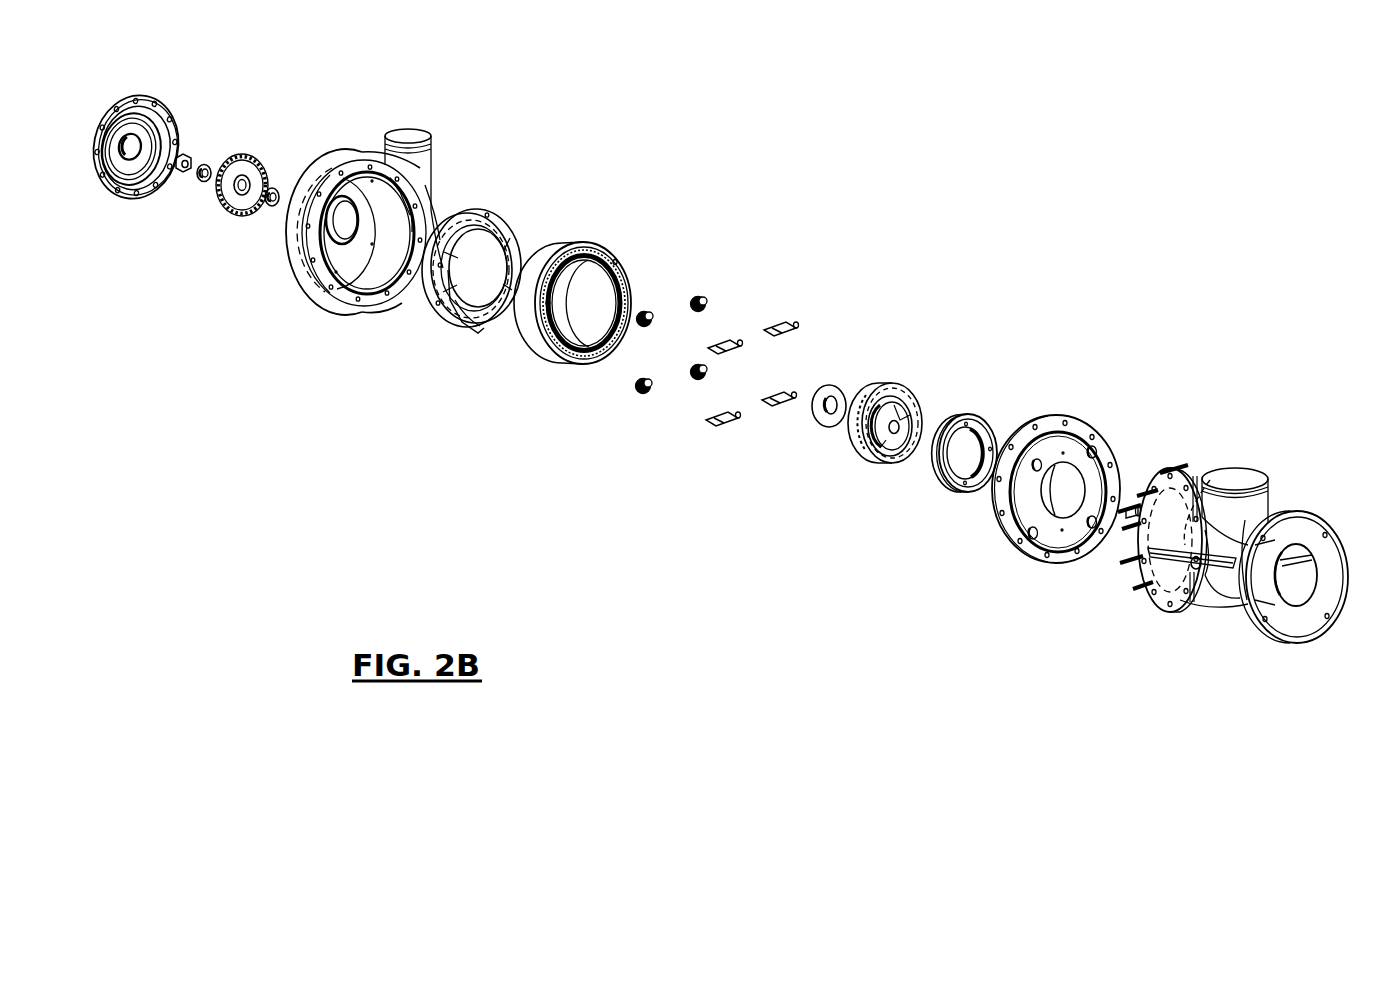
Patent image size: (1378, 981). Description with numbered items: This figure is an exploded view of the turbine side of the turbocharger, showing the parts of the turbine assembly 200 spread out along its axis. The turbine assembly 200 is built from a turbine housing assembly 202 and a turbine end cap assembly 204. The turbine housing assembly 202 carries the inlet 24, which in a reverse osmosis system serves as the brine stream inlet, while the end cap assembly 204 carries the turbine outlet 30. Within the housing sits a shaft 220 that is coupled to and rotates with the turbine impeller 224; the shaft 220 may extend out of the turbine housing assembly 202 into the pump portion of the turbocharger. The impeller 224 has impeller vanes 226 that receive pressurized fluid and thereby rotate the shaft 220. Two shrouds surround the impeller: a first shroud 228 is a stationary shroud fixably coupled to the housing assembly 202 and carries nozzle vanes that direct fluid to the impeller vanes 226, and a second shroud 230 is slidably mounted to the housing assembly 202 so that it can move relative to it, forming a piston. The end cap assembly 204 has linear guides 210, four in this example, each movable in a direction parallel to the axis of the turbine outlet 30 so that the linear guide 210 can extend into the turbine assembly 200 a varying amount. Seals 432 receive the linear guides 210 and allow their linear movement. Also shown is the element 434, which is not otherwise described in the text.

The turbine assembly 200 is at (950, 318).
The turbine housing assembly 202 is at (328, 150).
The turbine end cap assembly 204 is at (143, 97).
The inlet 24 is at (410, 133).
The first shroud 228 is at (468, 208).
The second shroud 230 is at (586, 245).
The seals 432 is at (697, 295).
The linear guide 210 is at (780, 322).
The impeller vanes 226 is at (899, 437).
The turbine impeller 224 is at (870, 460).
The seal ring 434 is at (982, 412).
The turbine outlet 30 is at (1252, 478).
The shaft 220 is at (1135, 535).